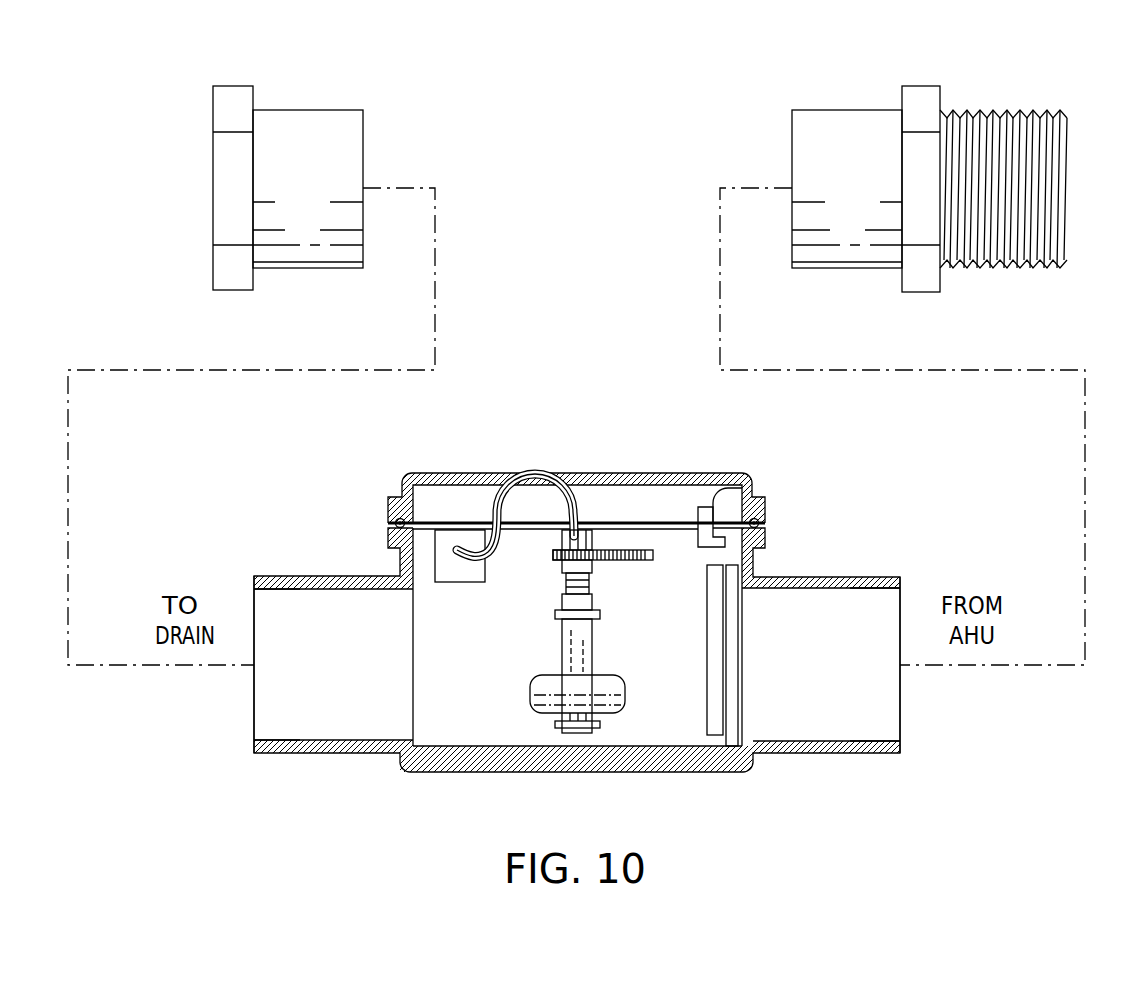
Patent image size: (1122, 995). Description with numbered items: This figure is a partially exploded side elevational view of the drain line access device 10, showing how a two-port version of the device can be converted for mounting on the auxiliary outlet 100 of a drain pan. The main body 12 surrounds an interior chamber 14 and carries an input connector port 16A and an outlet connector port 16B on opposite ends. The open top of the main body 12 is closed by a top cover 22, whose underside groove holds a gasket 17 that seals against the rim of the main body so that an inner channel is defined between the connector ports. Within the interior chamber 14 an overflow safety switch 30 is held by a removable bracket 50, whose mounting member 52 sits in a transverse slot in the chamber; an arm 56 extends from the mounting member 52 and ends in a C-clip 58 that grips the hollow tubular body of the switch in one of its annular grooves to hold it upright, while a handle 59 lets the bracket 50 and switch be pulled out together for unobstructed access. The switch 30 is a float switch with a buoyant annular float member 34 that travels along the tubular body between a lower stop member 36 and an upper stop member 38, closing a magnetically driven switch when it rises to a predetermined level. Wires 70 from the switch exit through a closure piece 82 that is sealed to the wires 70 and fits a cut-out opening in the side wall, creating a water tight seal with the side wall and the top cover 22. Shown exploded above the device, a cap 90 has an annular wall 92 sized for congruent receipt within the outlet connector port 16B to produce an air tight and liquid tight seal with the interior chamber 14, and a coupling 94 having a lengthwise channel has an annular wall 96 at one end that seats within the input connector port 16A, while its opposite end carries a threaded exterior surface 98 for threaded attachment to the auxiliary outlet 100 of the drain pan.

The access device 10 is at (744, 411).
The main body 12 is at (577, 698).
The interior chamber 14 is at (497, 733).
The input connector port 16A is at (902, 750).
The outlet connector port 16B is at (256, 750).
The gasket 17 is at (396, 518).
The top cover 22 is at (582, 461).
The overflow safety switch 30 is at (561, 674).
The annular float member 34 is at (530, 692).
The lower stop member 36 is at (548, 728).
The upper stop member 38 is at (555, 614).
The bracket 50 is at (689, 503).
The mounting member 52 is at (730, 632).
The arm 56 is at (638, 562).
The C-clip 58 is at (553, 553).
The handle 59 is at (753, 486).
The wires 70 is at (527, 488).
The closure piece 82 is at (460, 567).
The cap 90 is at (293, 153).
The annular wall 92 is at (341, 110).
The coupling 94 is at (897, 152).
The annular wall 96 is at (861, 110).
The threaded exterior surface 98 is at (1010, 110).
The auxiliary outlet 100 is at (195, 740).